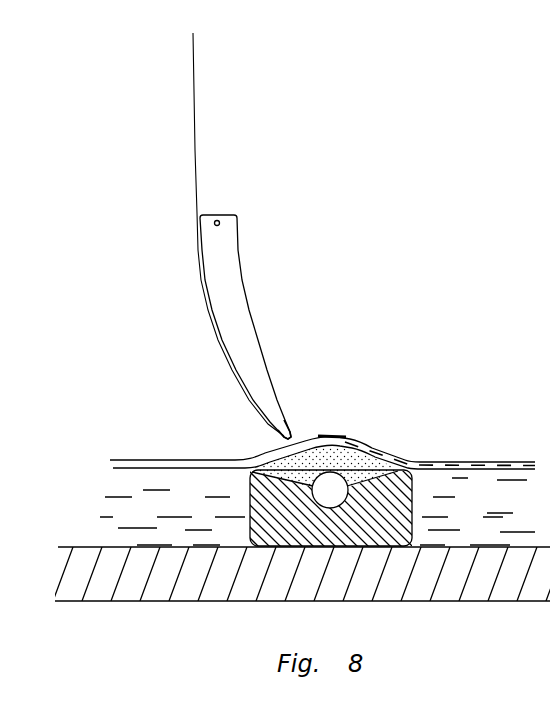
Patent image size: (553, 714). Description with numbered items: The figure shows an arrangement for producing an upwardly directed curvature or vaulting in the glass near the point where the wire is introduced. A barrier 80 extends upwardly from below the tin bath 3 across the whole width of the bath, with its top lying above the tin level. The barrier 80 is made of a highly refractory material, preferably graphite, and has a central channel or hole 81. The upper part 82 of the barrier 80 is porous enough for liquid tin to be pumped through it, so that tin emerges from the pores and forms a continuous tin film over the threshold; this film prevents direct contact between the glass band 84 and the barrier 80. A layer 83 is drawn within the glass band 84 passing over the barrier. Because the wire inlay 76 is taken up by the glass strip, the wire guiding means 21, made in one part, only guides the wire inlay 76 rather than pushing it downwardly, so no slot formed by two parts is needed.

The wire guiding means 21 is at (225, 265).
The wire inlay 76 is at (296, 440).
The glass band 84 is at (193, 463).
The sheet layer 83 is at (390, 462).
The upper part of the barrier 82 is at (343, 442).
The barrier 80 is at (395, 518).
The central channel 81 is at (330, 490).
The tin bath 3 is at (317, 511).